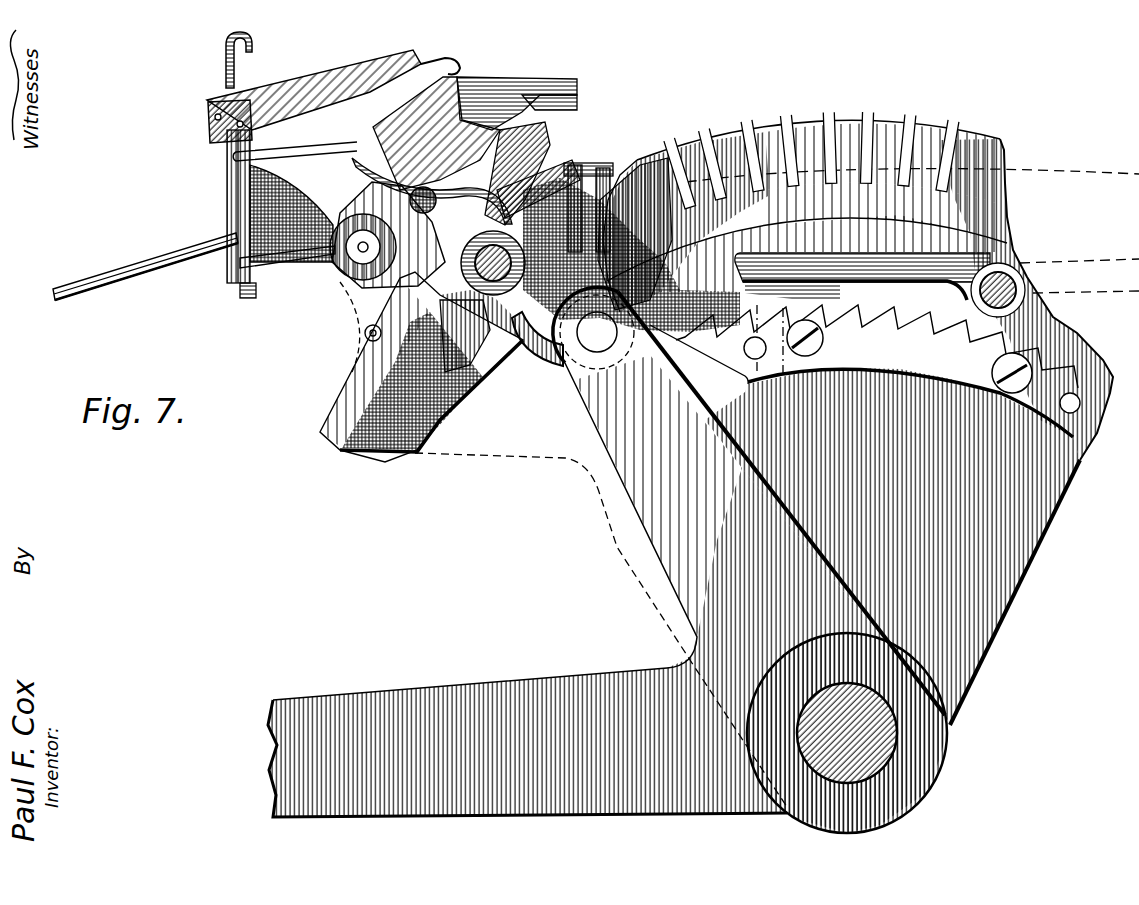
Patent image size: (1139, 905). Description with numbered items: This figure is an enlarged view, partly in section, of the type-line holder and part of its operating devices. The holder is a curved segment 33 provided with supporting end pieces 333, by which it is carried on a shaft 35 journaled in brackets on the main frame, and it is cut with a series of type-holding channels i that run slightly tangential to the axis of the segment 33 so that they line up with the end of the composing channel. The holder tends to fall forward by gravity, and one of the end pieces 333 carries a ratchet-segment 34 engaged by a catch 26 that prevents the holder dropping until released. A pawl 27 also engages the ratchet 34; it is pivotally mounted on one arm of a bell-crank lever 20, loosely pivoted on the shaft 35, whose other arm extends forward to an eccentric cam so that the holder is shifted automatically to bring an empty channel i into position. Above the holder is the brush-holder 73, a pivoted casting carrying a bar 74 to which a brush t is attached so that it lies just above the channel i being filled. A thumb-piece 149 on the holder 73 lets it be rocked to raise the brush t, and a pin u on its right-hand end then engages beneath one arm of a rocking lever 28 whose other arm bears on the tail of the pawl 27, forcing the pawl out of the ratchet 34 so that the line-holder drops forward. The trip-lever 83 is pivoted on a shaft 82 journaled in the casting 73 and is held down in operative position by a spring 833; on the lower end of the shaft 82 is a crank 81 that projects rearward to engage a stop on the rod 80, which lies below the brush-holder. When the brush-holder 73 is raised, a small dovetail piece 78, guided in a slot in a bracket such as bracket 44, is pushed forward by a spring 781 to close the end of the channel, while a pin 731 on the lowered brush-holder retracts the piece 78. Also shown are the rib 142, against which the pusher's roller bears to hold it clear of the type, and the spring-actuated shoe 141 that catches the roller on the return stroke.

The bell-crank lever 20 is at (687, 548).
The catch 26 is at (863, 266).
The pawl 27 is at (543, 352).
The rocking lever 28 is at (407, 182).
The curved segment 33 is at (871, 422).
The ratchet-segment 34 is at (877, 349).
The shaft 35 is at (846, 700).
The bracket 44 is at (458, 384).
The brush-holder 73 is at (495, 152).
The bar 74 is at (500, 76).
The dovetail piece 78 is at (415, 295).
The rod 80 is at (360, 260).
The crank 81 is at (310, 256).
The shaft 82 is at (243, 284).
The trip-lever 83 is at (277, 97).
The spring-actuated shoe 141 is at (580, 166).
The rib 142 is at (631, 245).
The thumb-piece 149 is at (147, 265).
The end piece 333 is at (1072, 342).
The pin 731 is at (393, 222).
The spring 781 is at (348, 345).
The spring 833 is at (429, 70).
The type-holding channels i is at (750, 133).
The brush t is at (585, 98).
The pin u is at (470, 184).